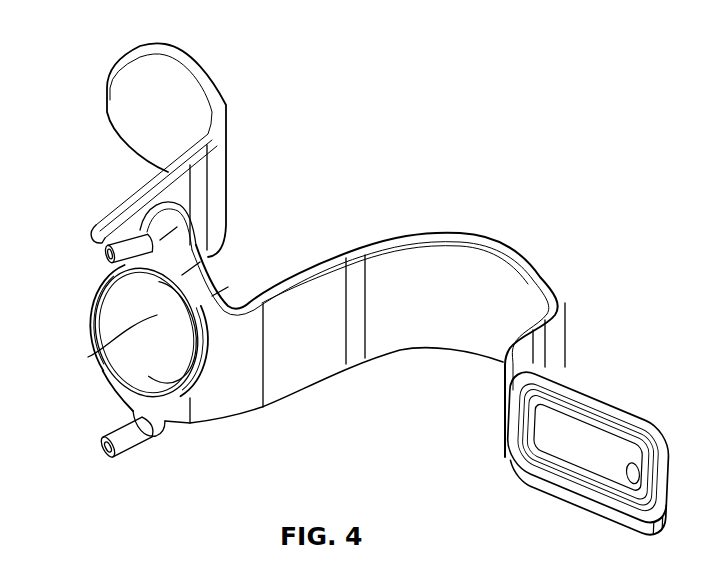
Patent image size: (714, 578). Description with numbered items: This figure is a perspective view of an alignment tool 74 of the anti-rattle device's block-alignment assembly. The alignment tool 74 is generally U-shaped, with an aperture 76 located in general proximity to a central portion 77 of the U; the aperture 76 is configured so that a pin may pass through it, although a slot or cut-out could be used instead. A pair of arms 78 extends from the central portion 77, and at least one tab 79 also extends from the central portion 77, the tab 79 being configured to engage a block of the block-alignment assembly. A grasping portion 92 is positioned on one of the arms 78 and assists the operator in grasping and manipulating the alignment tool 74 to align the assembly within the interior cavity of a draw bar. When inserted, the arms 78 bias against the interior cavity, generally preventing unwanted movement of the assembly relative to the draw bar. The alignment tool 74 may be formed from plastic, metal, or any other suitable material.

The alignment tool 74 is at (476, 158).
The aperture 76 is at (192, 273).
The central portion 77 is at (116, 376).
The arms 78 is at (127, 118).
The tab 79 is at (103, 252).
The grasping portion 92 is at (578, 470).